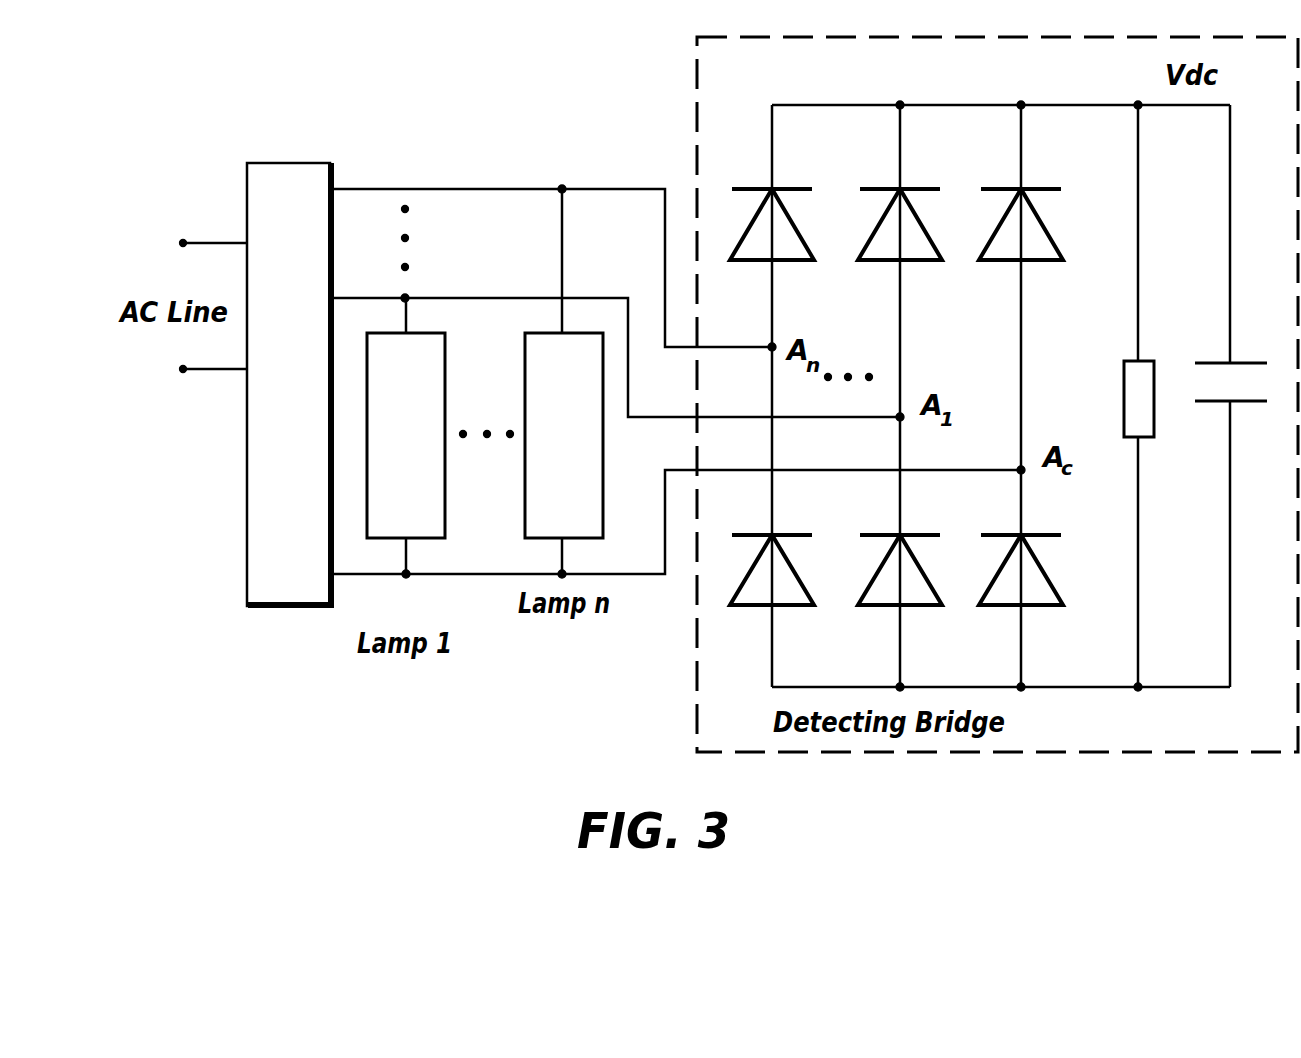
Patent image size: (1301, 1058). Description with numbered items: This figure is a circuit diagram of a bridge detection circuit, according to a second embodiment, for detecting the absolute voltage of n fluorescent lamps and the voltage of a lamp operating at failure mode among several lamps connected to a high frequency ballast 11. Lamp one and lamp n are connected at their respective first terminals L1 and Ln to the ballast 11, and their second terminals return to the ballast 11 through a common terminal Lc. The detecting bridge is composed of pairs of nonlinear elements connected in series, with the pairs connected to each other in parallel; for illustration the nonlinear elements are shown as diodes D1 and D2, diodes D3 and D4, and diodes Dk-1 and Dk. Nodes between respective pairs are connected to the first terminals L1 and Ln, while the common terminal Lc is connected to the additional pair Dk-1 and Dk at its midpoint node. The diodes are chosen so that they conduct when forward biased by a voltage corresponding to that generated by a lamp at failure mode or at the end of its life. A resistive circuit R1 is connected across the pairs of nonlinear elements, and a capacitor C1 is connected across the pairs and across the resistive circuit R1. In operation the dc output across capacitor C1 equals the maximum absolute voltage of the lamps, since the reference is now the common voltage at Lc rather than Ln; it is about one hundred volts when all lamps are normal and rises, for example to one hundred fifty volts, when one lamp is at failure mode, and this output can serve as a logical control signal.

The high frequency ballast 11 is at (223, 343).
The diode D1 is at (782, 224).
The diode D2 is at (782, 570).
The diode D3 is at (909, 224).
The diode D4 is at (909, 570).
The diode Dk-1 is at (1041, 224).
The diode Dk is at (1032, 570).
The resistive circuit R1 is at (1160, 396).
The capacitor C1 is at (1234, 396).
The first terminal L1 is at (616, 337).
The first terminal Ln is at (552, 249).
The common terminal Lc is at (677, 545).